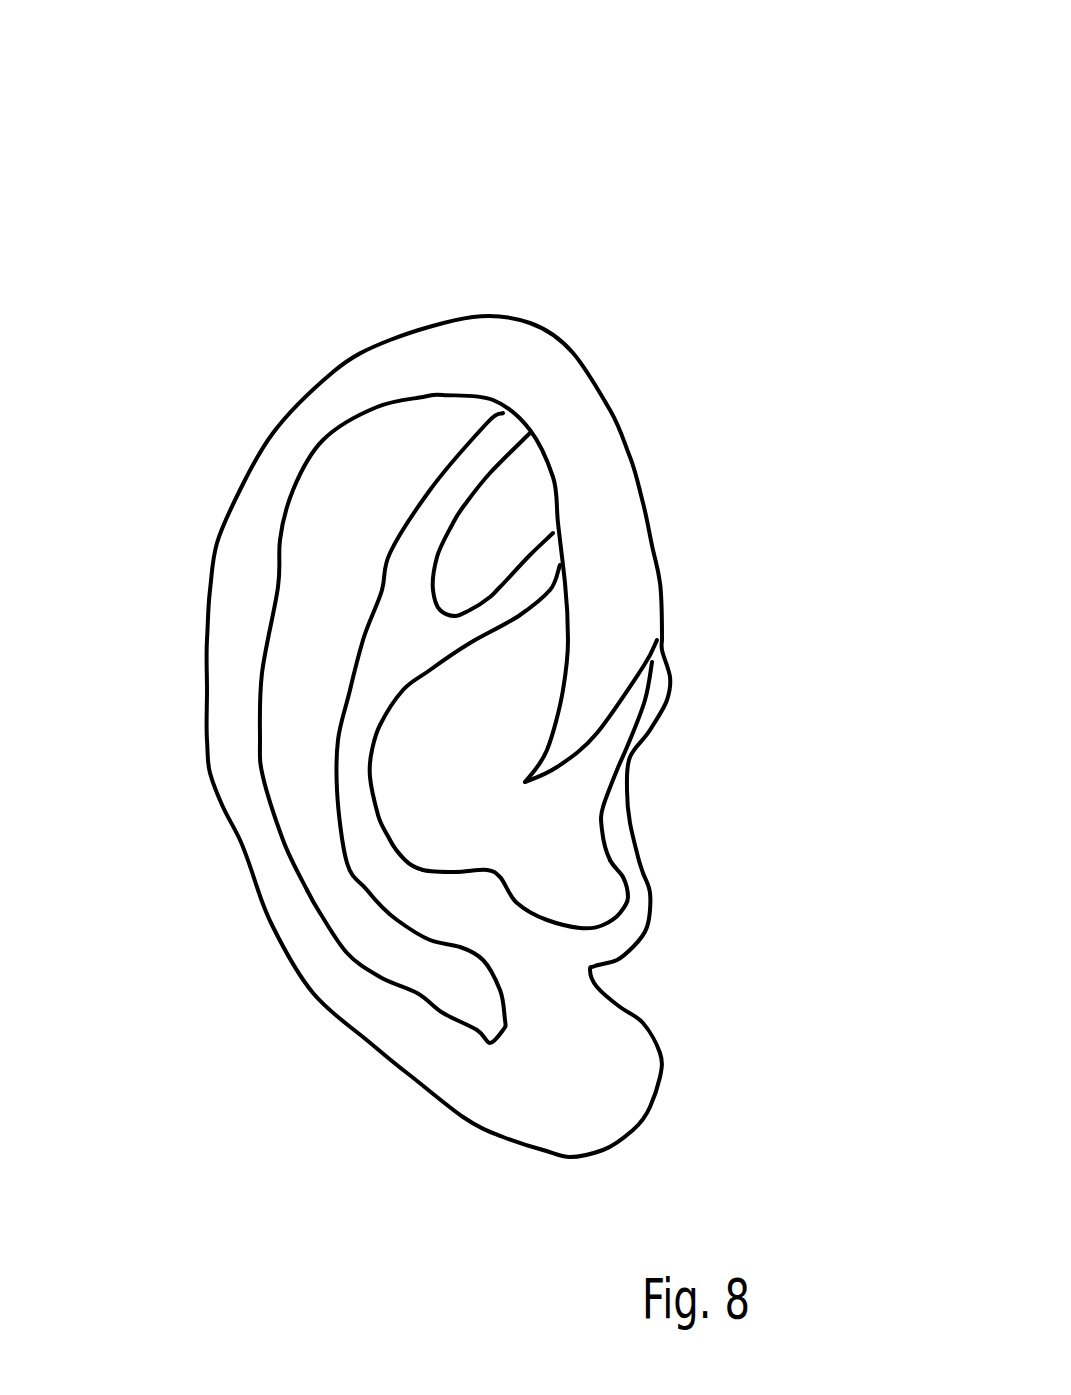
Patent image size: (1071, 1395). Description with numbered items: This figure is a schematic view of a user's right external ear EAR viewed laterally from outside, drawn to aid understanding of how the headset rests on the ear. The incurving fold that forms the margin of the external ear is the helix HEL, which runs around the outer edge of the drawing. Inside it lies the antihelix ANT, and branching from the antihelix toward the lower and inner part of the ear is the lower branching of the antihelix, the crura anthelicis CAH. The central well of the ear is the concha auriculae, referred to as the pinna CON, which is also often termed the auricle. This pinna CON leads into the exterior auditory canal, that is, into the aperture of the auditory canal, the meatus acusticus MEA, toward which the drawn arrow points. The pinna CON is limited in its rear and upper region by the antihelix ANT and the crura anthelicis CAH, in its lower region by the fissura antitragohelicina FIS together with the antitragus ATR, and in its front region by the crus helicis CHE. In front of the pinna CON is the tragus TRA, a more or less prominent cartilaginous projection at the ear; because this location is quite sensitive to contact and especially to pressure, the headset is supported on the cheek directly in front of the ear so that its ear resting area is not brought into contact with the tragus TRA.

The right external ear EAR is at (425, 272).
The helix HEL is at (518, 365).
The antihelix ANT is at (357, 797).
The crura anthelicis CAH is at (493, 442).
The crus helicis CHE is at (582, 740).
The tragus TRA is at (615, 823).
The antitragus ATR is at (500, 875).
The aperture of the auditory canal (meatus acusticus) MEA is at (603, 910).
The pinna (concha auriculae) CON is at (403, 847).
The fissura antitragohelicina FIS is at (448, 883).